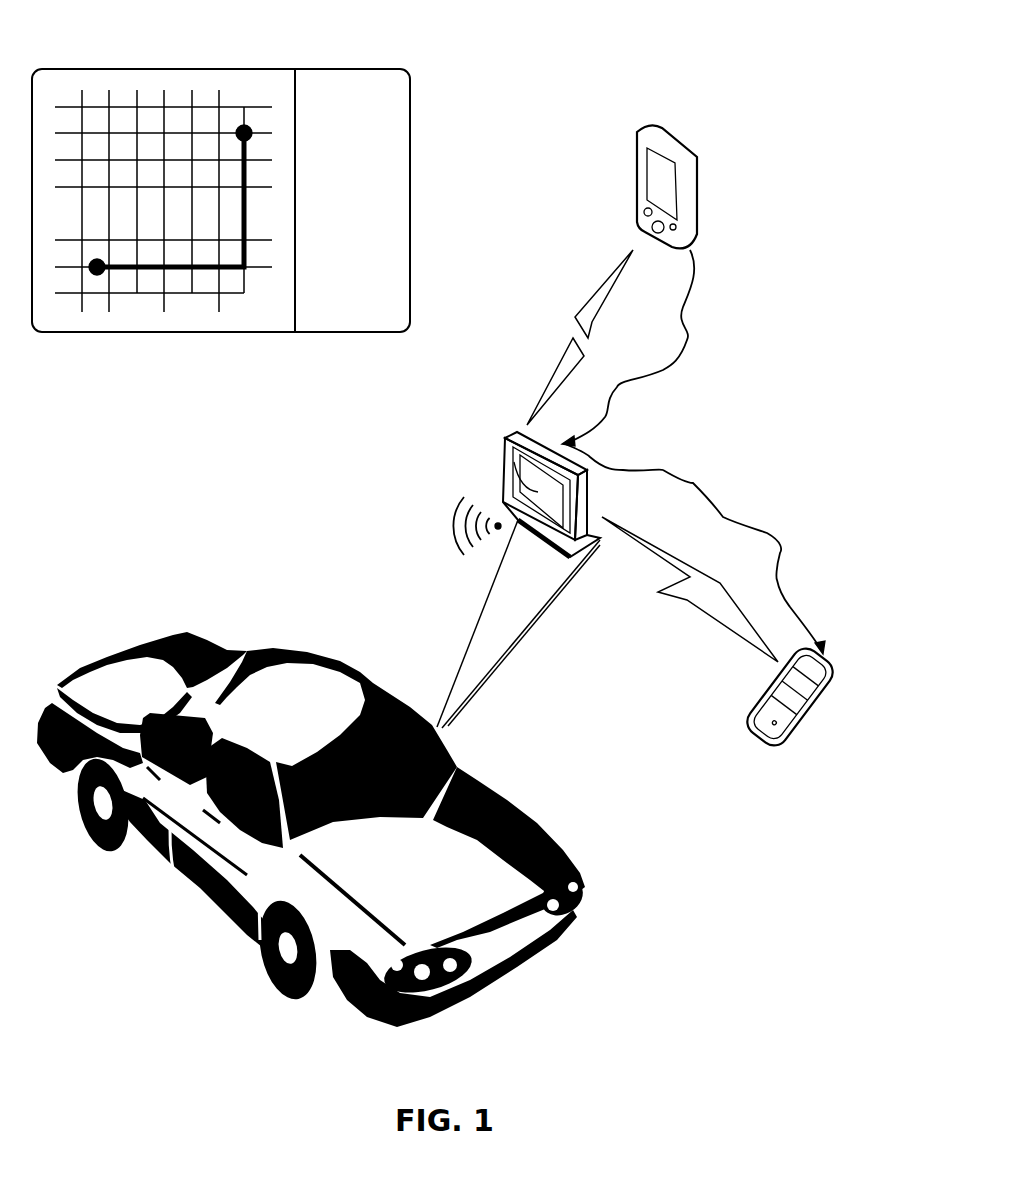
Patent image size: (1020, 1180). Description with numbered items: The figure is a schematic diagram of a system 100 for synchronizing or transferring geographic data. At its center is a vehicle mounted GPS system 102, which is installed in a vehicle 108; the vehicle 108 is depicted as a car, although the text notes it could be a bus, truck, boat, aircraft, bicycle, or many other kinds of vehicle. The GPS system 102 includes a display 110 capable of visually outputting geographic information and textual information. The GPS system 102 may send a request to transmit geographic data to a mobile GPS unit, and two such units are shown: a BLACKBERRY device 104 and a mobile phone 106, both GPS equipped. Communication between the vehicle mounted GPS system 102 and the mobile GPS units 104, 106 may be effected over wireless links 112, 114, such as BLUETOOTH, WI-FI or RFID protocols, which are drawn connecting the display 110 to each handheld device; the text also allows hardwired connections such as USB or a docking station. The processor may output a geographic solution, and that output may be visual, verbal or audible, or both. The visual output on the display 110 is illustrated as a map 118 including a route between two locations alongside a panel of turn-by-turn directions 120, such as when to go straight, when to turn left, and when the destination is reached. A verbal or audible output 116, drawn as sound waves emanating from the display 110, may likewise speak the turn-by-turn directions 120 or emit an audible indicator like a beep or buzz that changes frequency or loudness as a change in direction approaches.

The system 100 is at (823, 144).
The vehicle mounted GPS system 102 is at (600, 546).
The BLACKBERRY device 104 is at (640, 132).
The mobile phone 106 is at (797, 728).
The vehicle 108 is at (311, 650).
The display 110 is at (220, 351).
The communication link 112 is at (723, 517).
The wireless link 114 is at (578, 313).
The verbal or audible output 116 is at (458, 545).
The map 118 is at (146, 81).
The turn-by-turn directions 120 is at (405, 141).